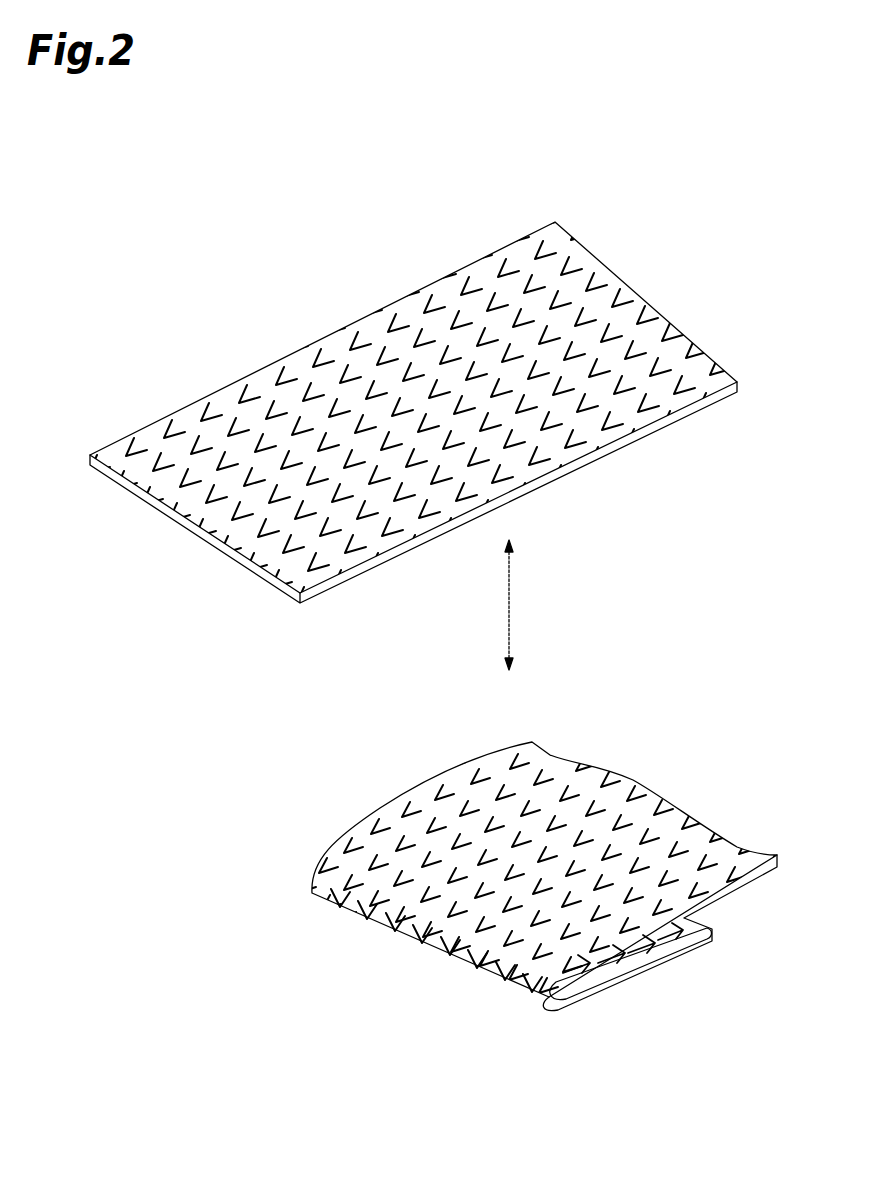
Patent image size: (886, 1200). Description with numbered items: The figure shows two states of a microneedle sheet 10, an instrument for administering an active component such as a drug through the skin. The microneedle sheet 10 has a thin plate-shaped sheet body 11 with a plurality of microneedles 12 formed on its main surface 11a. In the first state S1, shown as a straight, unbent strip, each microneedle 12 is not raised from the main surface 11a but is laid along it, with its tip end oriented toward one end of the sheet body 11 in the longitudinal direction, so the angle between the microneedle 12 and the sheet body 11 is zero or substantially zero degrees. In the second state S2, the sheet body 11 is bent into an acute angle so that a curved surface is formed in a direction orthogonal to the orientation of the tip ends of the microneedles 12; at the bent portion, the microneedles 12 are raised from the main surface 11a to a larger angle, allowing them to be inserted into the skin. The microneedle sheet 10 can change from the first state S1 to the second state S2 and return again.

The microneedle sheet 10 is at (448, 618).
The sheet body 11 is at (580, 463).
The main surface 11a is at (328, 377).
The microneedles 12 is at (263, 538).
The first state S1 is at (697, 255).
The second state S2 is at (700, 778).